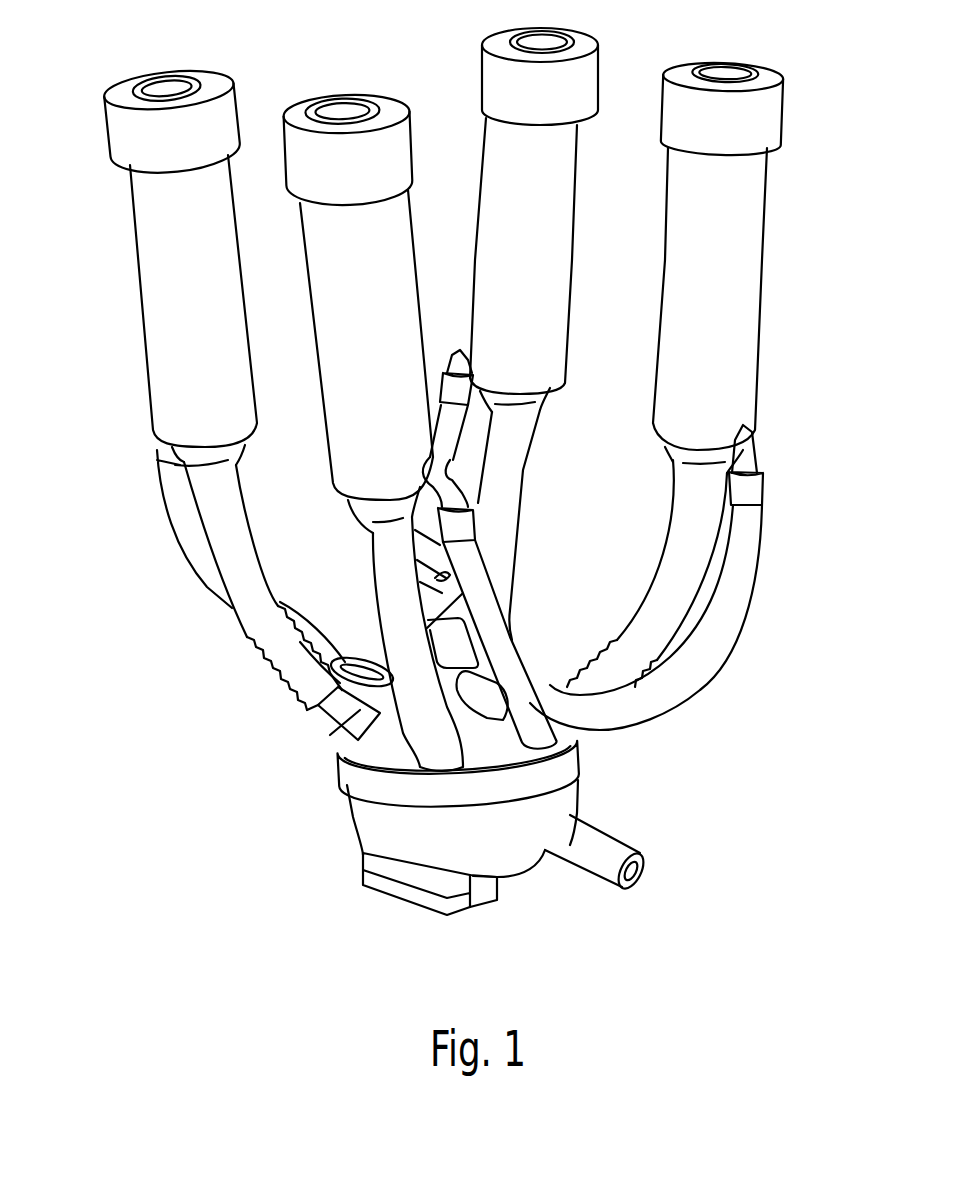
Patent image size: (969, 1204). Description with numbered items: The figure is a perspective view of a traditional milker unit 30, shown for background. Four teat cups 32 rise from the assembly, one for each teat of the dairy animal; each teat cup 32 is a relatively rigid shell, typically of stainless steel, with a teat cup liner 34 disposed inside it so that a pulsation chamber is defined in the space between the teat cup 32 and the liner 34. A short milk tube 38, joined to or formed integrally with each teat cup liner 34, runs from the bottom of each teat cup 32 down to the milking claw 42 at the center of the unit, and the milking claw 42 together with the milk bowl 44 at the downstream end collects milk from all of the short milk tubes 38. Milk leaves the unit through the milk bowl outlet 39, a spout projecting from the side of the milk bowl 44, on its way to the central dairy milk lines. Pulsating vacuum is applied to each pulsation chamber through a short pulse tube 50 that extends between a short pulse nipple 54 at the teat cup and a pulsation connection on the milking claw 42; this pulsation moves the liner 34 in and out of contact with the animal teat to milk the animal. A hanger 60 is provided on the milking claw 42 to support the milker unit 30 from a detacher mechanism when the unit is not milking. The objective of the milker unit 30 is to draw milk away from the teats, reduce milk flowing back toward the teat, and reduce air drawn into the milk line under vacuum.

The milker unit 30 is at (822, 174).
The teat cup 32 is at (170, 248).
The teat cup liner 34 is at (205, 120).
The short milk tube 38 is at (258, 620).
The milk bowl outlet 39 is at (575, 877).
The milking claw 42 is at (373, 757).
The milk bowl 44 is at (380, 836).
The short pulse tube 50 is at (457, 420).
The short pulse nipple 54 is at (160, 452).
The hanger 60 is at (313, 707).